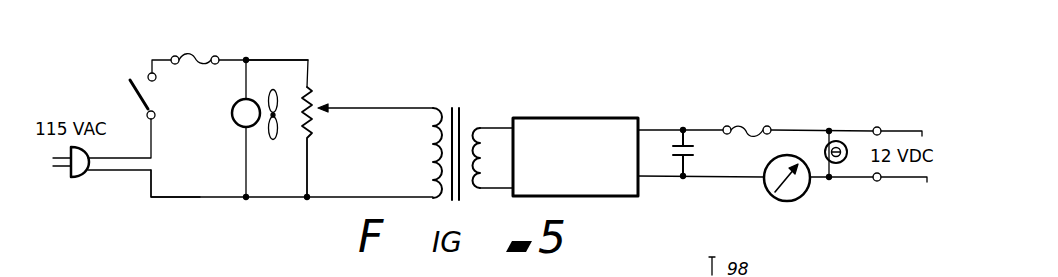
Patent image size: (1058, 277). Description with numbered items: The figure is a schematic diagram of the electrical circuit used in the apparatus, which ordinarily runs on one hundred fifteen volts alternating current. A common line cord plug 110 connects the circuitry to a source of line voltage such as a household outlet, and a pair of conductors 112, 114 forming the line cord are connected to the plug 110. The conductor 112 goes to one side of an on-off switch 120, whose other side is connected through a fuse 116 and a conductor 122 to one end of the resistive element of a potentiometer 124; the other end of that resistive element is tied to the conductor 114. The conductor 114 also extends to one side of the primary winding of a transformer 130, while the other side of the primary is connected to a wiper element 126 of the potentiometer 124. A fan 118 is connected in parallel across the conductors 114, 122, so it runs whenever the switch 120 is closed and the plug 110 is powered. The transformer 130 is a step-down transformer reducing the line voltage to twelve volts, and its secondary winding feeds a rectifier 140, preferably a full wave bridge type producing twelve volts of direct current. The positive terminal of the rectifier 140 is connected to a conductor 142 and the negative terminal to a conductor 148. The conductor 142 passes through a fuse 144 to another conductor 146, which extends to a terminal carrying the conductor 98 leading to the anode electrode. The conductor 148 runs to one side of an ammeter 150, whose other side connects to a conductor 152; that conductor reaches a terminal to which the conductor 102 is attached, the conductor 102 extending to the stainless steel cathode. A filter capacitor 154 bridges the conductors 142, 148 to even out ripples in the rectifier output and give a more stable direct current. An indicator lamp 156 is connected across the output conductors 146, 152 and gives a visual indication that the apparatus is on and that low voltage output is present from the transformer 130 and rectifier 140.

The conductor 98 is at (900, 129).
The conductor 102 is at (902, 180).
The line cord plug 110 is at (83, 177).
The conductor 112 is at (135, 98).
The conductor 114 is at (152, 184).
The fuse 116 is at (191, 53).
The fan 118 is at (232, 115).
The on-off switch 120 is at (128, 81).
The conductor 122 is at (283, 58).
The potentiometer 124 is at (319, 96).
The wiper element 126 is at (363, 110).
The transformer 130 is at (469, 114).
The rectifier 140 is at (567, 113).
The conductor 142 is at (658, 129).
The fuse 144 is at (748, 127).
The conductor 146 is at (793, 129).
The conductor 148 is at (712, 178).
The ammeter 150 is at (771, 197).
The conductor 152 is at (855, 178).
The filter capacitor 154 is at (689, 156).
The indicator lamp 156 is at (846, 148).